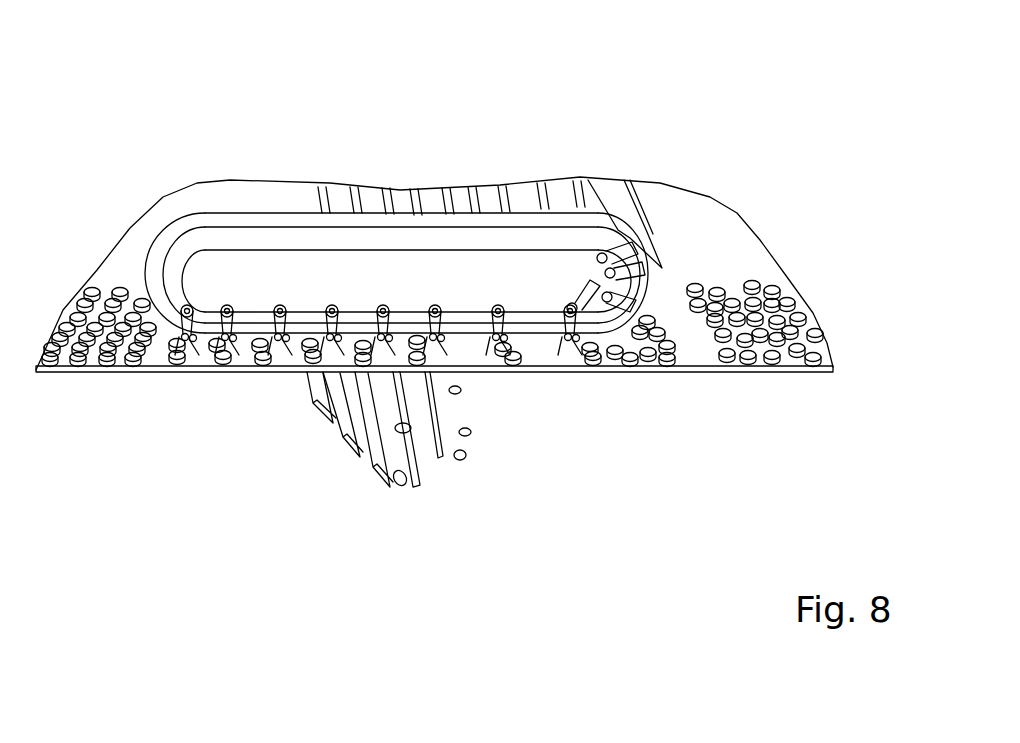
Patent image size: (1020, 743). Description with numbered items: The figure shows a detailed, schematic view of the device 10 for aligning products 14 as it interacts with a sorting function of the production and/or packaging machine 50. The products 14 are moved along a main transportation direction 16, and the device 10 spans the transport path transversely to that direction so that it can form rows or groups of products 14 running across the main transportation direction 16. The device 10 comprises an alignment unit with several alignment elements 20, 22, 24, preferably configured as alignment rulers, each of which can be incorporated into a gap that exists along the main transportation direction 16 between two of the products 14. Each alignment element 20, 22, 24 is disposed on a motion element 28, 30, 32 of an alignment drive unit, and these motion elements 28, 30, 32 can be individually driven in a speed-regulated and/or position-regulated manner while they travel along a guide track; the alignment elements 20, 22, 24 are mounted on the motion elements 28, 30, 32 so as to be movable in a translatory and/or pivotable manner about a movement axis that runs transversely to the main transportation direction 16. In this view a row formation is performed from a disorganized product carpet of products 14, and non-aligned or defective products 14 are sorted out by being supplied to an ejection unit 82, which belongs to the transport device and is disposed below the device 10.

The device for aligning products 10 is at (596, 144).
The products 14 is at (674, 368).
The main transportation direction 16 is at (788, 248).
The alignment element 20 is at (565, 336).
The alignment element 22 is at (460, 332).
The alignment element 24 is at (455, 337).
The motion element 28 is at (548, 300).
The motion element 30 is at (482, 307).
The motion element 32 is at (418, 303).
The production and/or packaging machine 50 is at (735, 113).
The ejection unit 82 is at (328, 463).